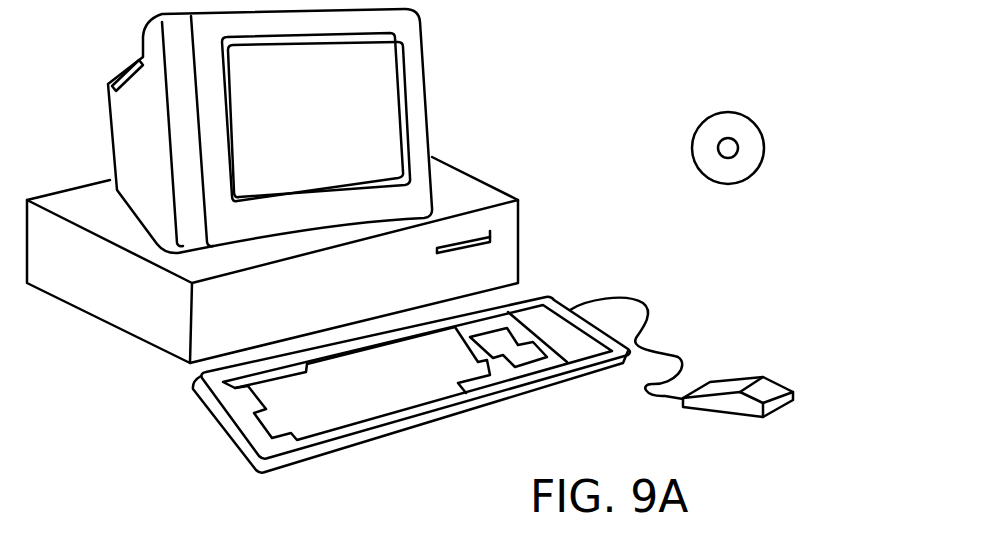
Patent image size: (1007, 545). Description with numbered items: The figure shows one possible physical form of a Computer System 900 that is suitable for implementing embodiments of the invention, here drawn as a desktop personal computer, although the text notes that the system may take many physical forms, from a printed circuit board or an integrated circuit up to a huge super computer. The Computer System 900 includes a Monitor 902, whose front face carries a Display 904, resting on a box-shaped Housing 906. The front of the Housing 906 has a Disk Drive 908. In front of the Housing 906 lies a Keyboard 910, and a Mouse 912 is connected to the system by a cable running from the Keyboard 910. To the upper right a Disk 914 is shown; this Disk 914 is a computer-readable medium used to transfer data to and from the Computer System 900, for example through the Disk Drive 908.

The computer system 900 is at (634, 88).
The monitor 902 is at (432, 130).
The display 904 is at (387, 78).
The housing 906 is at (157, 347).
The disk drive 908 is at (492, 230).
The keyboard 910 is at (421, 425).
The mouse 912 is at (777, 383).
The disk 914 is at (748, 114).